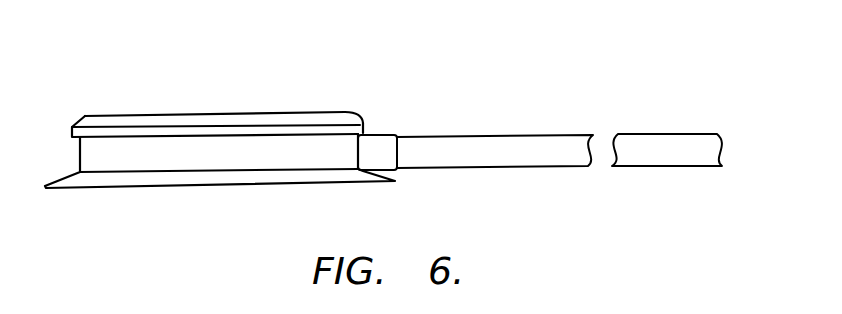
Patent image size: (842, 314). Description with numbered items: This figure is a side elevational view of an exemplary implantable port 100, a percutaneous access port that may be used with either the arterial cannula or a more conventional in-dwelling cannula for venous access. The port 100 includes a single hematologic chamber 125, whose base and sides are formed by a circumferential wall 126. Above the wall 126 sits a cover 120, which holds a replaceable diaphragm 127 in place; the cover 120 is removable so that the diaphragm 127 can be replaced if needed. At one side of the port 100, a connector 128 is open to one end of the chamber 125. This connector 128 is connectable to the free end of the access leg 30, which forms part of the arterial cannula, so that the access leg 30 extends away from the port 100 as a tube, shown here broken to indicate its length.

The implantable port 100 is at (400, 46).
The cover 120 is at (352, 113).
The hematologic chamber 125 is at (242, 102).
The replaceable diaphragm 127 is at (177, 113).
The circumferential wall 126 is at (163, 162).
The connector 128 is at (384, 146).
The access leg 30 is at (508, 135).